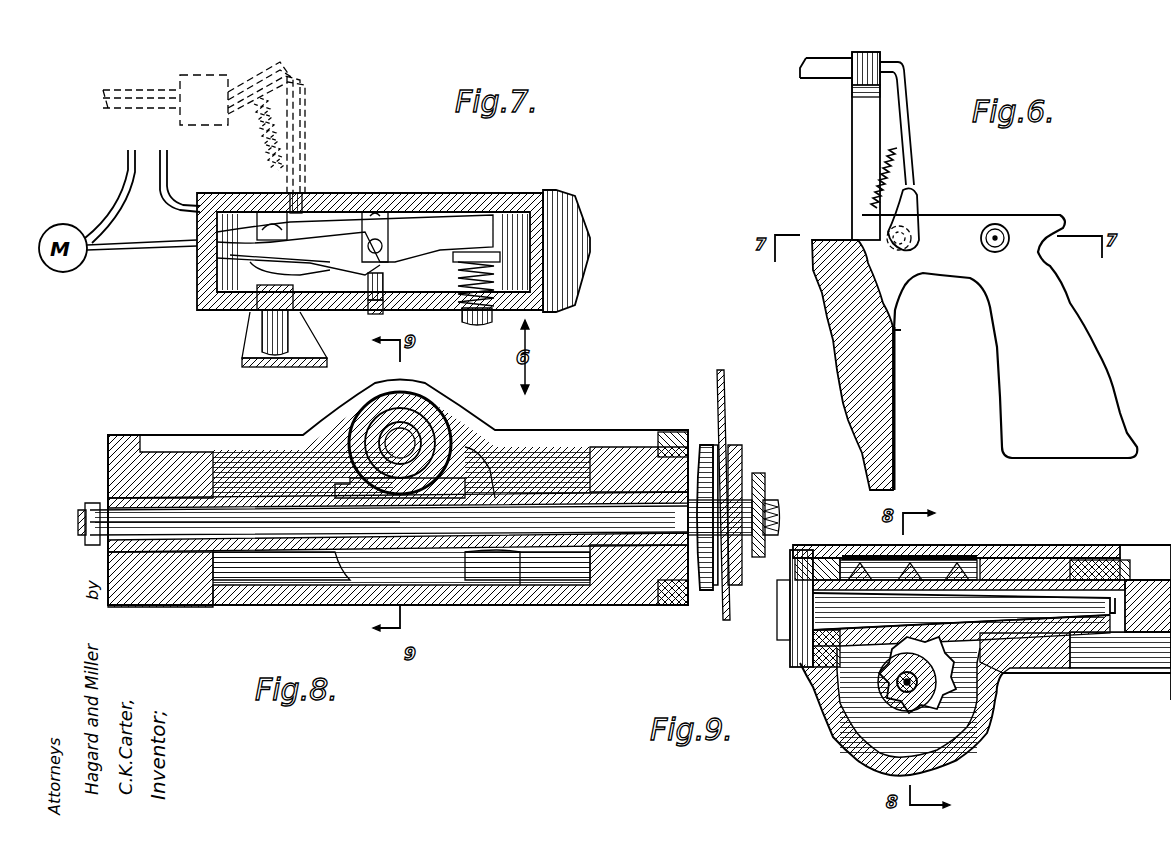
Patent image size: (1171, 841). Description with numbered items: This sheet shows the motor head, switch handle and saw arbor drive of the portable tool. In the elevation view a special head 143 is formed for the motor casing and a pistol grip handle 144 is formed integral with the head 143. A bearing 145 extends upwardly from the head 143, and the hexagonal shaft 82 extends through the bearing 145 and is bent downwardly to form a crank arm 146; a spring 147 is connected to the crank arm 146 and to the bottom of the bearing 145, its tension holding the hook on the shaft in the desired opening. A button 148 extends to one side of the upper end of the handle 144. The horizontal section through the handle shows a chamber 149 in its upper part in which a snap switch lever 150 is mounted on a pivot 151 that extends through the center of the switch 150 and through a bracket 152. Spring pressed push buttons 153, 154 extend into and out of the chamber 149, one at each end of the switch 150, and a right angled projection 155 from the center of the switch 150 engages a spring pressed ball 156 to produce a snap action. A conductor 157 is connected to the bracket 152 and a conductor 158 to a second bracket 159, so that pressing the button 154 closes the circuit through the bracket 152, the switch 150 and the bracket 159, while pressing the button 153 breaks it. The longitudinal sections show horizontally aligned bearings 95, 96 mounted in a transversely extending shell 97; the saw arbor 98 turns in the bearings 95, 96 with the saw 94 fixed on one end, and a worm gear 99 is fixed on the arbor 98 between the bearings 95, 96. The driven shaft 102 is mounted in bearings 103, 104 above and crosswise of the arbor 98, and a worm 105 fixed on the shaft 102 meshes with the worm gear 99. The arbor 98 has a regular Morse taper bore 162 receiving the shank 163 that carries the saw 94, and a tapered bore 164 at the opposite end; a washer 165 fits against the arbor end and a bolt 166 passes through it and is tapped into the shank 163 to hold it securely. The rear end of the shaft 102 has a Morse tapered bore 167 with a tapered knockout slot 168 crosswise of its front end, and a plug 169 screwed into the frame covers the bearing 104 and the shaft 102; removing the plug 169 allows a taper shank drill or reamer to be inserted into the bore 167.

In FIG. 7, the hexagonal shaft 82 is at (138, 118).
In FIG. 6, the hexagonal shaft 82 is at (840, 72).
In FIG. 8, the saw 94 is at (723, 420).
In FIG. 8, the bearing 95 is at (155, 468).
In FIG. 8, the bearing 96 is at (670, 450).
In FIG. 8, the shell 97 is at (597, 445).
In FIG. 9, the shell 97 is at (980, 548).
In FIG. 8, the saw arbor 98 is at (553, 500).
In FIG. 9, the saw arbor 98 is at (923, 723).
In FIG. 8, the worm gear 99 is at (460, 478).
In FIG. 9, the worm gear 99 is at (948, 683).
In FIG. 8, the driven shaft 102 is at (400, 443).
In FIG. 9, the bearing 103 is at (1030, 560).
In FIG. 9, the bearing 104 is at (826, 555).
In FIG. 8, the worm 105 is at (452, 410).
In FIG. 6, the special head 143 is at (890, 455).
In FIG. 7, the pistol grip handle 144 is at (575, 238).
In FIG. 6, the pistol grip handle 144 is at (1055, 320).
In FIG. 6, the bearing 145 is at (852, 157).
In FIG. 7, the crank arm 146 is at (300, 160).
In FIG. 6, the crank arm 146 is at (910, 163).
In FIG. 7, the spring 147 is at (252, 145).
In FIG. 6, the spring 147 is at (880, 198).
In FIG. 7, the button 148 is at (318, 365).
In FIG. 6, the button 148 is at (912, 246).
In FIG. 7, the chamber 149 is at (513, 213).
In FIG. 7, the snap switch lever 150 is at (430, 230).
In FIG. 7, the pivot 151 is at (380, 246).
In FIG. 7, the bracket 152 is at (374, 220).
In FIG. 7, the push button 153 is at (482, 312).
In FIG. 6, the push button 153 is at (996, 236).
In FIG. 7, the push button 154 is at (262, 312).
In FIG. 6, the push button 154 is at (918, 218).
In FIG. 7, the right angled projection 155 is at (385, 270).
In FIG. 7, the spring pressed ball 156 is at (385, 290).
In FIG. 7, the conductor 157 is at (167, 152).
In FIG. 7, the conductor 158 is at (128, 162).
In FIG. 7, the second bracket 159 is at (290, 228).
In FIG. 8, the Morse taper bore 162 is at (555, 540).
In FIG. 8, the shank 163 is at (389, 519).
In FIG. 9, the shank 163 is at (795, 695).
In FIG. 8, the tapered bore 164 is at (265, 535).
In FIG. 8, the washer 165 is at (88, 540).
In FIG. 8, the bolt 166 is at (85, 522).
In FIG. 9, the bolt 166 is at (862, 703).
In FIG. 8, the Morse tapered bore 167 is at (392, 422).
In FIG. 9, the Morse tapered bore 167 is at (1080, 575).
In FIG. 9, the tapered knockout slot 168 is at (1120, 590).
In FIG. 9, the plug 169 is at (795, 645).